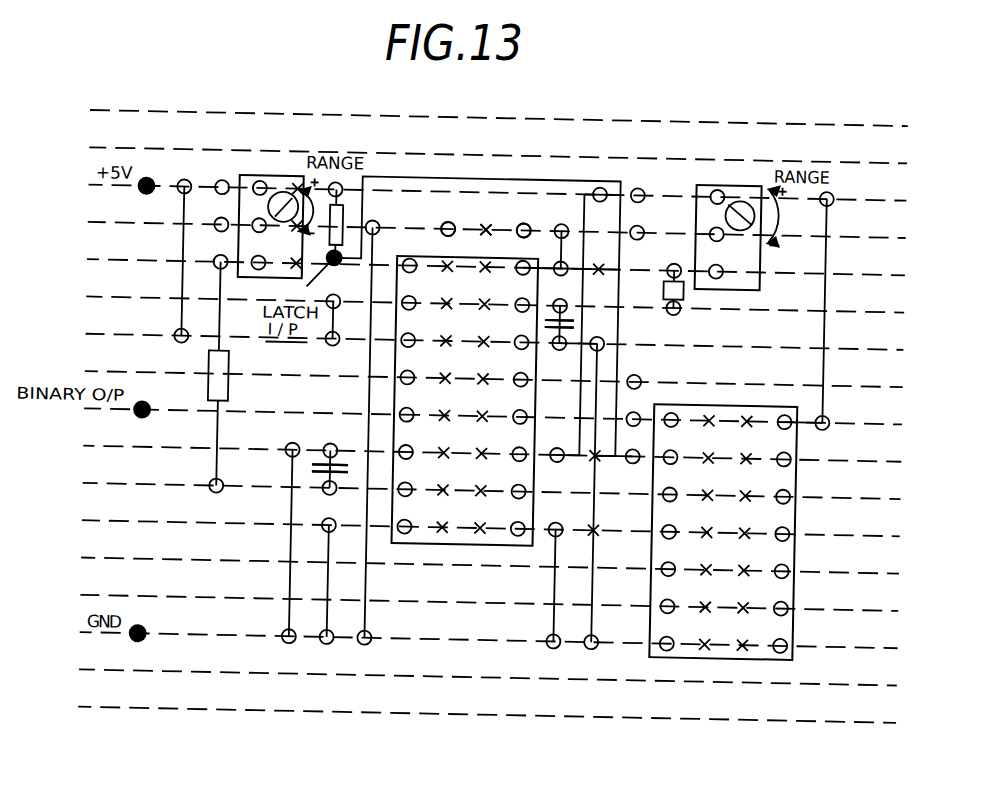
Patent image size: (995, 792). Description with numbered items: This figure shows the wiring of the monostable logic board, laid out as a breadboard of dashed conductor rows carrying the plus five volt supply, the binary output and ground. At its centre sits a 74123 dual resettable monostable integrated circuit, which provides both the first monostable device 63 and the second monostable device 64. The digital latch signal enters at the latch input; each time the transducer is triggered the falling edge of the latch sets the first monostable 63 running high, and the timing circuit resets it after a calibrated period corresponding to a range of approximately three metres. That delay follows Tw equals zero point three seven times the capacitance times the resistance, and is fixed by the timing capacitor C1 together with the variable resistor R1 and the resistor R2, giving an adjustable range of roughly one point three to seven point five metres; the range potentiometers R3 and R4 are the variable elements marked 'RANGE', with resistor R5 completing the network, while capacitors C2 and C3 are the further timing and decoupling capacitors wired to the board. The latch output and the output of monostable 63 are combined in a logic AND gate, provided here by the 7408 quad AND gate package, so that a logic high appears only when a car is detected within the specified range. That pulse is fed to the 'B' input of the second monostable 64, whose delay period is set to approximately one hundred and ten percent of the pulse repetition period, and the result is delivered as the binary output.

The first monostable device 63 is at (453, 509).
The second monostable device 64 is at (464, 411).
The 74123 dual resettable monostable 74123 is at (464, 411).
The quad AND gate IC 7408 is at (747, 668).
The variable resistor R1 is at (667, 279).
The resistor R2 is at (234, 380).
The range potentiometer R3 is at (271, 215).
The range potentiometer R4 is at (728, 228).
The resistor R5 is at (343, 215).
The timing capacitor C1 is at (581, 316).
The capacitor C2 is at (330, 447).
The capacitor C3 is at (486, 220).